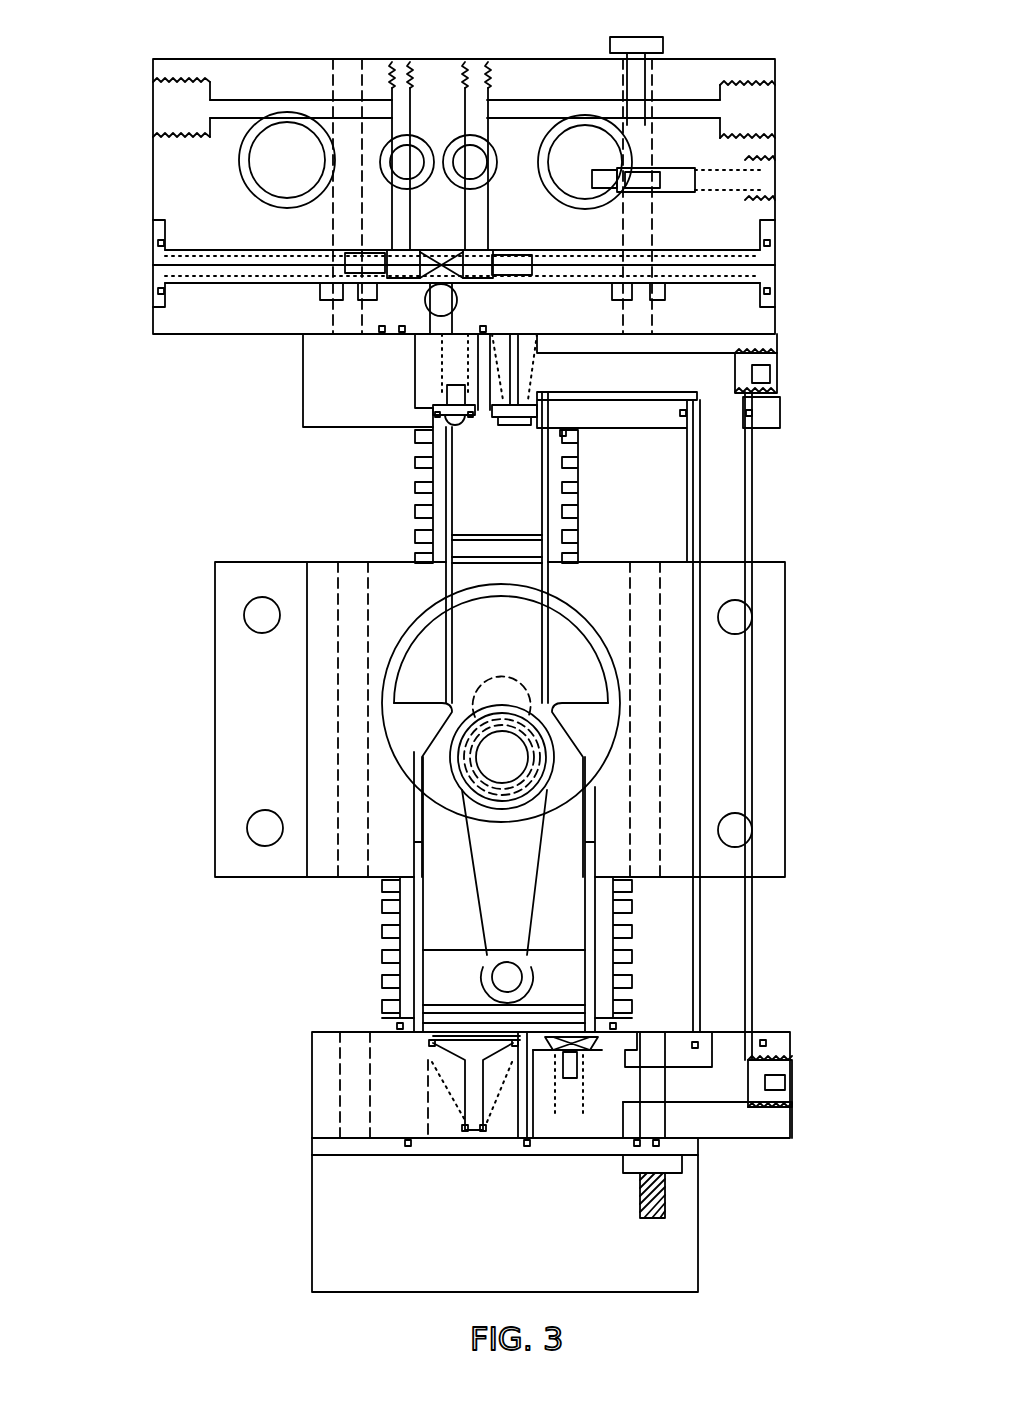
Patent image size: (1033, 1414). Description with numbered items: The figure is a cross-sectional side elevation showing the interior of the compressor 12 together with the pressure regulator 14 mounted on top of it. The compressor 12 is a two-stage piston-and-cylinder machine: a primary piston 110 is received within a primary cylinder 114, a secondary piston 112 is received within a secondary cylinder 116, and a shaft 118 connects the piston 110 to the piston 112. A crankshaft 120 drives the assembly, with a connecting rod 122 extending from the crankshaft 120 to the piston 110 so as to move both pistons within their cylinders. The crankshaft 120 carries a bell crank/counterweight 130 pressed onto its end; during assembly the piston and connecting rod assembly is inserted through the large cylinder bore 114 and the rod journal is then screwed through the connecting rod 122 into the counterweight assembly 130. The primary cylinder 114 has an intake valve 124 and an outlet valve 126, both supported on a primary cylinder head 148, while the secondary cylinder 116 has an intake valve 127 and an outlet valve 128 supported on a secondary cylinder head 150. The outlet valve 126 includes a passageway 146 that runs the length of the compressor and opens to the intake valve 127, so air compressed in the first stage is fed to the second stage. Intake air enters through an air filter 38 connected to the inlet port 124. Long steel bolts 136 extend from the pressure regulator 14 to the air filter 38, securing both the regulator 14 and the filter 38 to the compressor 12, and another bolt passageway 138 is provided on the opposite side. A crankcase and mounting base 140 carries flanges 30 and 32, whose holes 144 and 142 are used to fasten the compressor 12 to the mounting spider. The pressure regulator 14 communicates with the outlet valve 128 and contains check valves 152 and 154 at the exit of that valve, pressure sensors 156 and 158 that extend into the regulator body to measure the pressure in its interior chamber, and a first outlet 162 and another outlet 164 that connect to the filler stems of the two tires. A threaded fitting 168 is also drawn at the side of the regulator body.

The compressor 12 is at (872, 730).
The pressure regulator 14 is at (545, 67).
The flange 30 is at (772, 582).
The flange 32 is at (237, 566).
The air filter 38 is at (683, 1265).
The primary piston 110 is at (447, 980).
The secondary piston 112 is at (472, 537).
The primary cylinder 114 is at (593, 870).
The secondary cylinder 116 is at (543, 505).
The shaft 118 is at (528, 647).
The crankshaft 120 is at (490, 692).
The connecting rod 122 is at (522, 880).
The intake valve 124 is at (470, 1052).
The outlet valve 126 is at (573, 1043).
The intake valve 127 is at (512, 415).
The outlet valve 128 is at (442, 428).
The bell crank/counterweight 130 is at (597, 730).
The long steel bolts 136 is at (665, 1188).
The bolt passageway 138 is at (353, 870).
The crankcase and mounting base 140 is at (235, 722).
The holes 142 is at (253, 612).
The holes 144 is at (748, 622).
The passageway 146 is at (735, 975).
The primary cylinder head 148 is at (793, 1122).
The secondary cylinder head 150 is at (763, 415).
The check valve 152 is at (480, 258).
The check valve 154 is at (410, 258).
The pressure sensor 156 is at (247, 257).
The pressure sensor 158 is at (755, 265).
The first outlet 162 is at (165, 110).
The outlet 164 is at (758, 105).
The fitting 168 is at (758, 182).